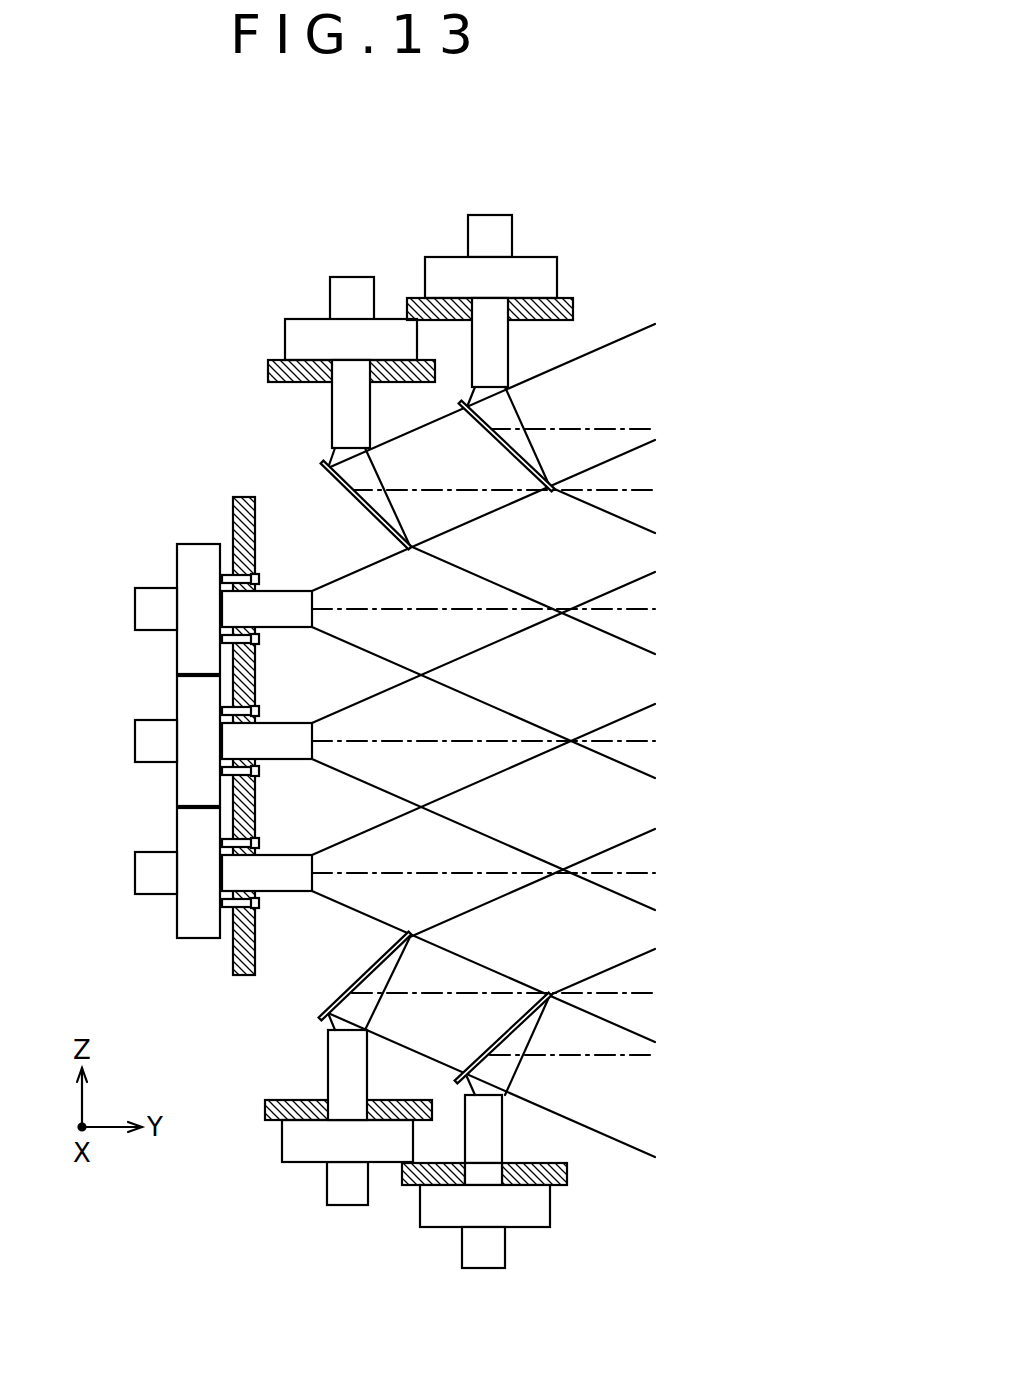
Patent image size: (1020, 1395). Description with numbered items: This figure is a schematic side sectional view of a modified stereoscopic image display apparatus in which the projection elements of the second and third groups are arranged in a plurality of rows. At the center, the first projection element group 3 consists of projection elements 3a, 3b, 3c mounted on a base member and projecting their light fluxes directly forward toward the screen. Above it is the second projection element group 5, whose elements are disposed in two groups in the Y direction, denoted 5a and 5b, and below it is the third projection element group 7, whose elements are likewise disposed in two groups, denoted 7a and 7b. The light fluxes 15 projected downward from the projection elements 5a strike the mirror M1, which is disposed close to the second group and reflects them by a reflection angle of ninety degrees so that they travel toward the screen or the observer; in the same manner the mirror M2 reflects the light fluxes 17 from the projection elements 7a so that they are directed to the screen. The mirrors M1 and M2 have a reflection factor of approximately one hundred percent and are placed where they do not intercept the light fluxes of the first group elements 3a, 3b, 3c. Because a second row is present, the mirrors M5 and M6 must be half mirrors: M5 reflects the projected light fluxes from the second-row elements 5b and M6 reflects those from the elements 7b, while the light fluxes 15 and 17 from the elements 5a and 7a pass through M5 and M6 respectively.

The first projection element group 3 is at (347, 741).
The first group projection element 3a is at (135, 611).
The first group projection element 3b is at (135, 743).
The first group projection element 3c is at (370, 873).
The second projection element group 5 is at (461, 389).
The second group projection elements in first row 5a is at (353, 296).
The second group projection elements in second row 5b is at (531, 353).
The third projection element group 7 is at (460, 1095).
The third group projection elements in first row 7a is at (351, 1197).
The third group projection elements in second row 7b is at (528, 1131).
The light fluxes 15 is at (400, 445).
The light fluxes 17 is at (386, 1032).
The mirror M1 is at (362, 506).
The mirror M2 is at (357, 977).
The half mirror M5 is at (500, 444).
The half mirror M6 is at (497, 1036).